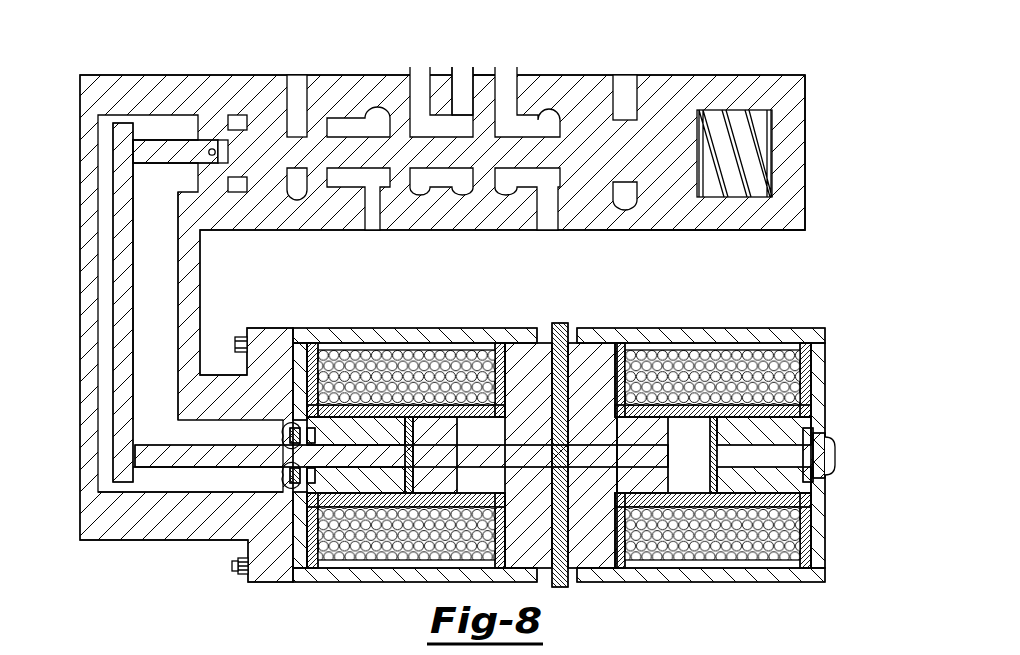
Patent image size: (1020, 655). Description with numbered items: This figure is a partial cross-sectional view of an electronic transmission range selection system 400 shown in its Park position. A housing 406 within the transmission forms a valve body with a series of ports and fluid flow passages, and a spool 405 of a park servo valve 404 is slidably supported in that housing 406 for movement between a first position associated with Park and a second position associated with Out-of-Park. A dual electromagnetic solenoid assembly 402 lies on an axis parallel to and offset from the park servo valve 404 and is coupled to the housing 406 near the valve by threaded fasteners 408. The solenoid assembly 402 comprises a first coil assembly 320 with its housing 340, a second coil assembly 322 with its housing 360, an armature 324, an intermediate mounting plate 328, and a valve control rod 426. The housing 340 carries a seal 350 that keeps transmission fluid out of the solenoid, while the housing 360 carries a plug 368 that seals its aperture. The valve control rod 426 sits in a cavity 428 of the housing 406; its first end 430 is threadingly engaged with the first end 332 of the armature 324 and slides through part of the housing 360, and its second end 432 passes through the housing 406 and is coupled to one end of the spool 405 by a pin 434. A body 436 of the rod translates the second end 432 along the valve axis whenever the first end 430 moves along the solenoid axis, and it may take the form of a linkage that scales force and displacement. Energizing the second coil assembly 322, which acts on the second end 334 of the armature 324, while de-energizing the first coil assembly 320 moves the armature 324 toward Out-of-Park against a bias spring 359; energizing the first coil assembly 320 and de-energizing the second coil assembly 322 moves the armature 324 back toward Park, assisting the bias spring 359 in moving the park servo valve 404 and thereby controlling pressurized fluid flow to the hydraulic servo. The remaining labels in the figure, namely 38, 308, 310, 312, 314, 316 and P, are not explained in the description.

The valve housing 38 is at (808, 173).
The pressure port 308 is at (457, 62).
The exhaust port 310 is at (420, 67).
The supply port 312 is at (506, 93).
The first control port 314 is at (377, 222).
The second control port 316 is at (550, 208).
The first coil assembly 320 is at (323, 594).
The second coil assembly 322 is at (780, 594).
The armature 324 is at (588, 433).
The intermediate mounting plate 328 is at (562, 323).
The first end of armature 332 is at (420, 470).
The second end of armature 334 is at (630, 471).
The housing of first coil assembly 340 is at (695, 583).
The seal 350 is at (284, 474).
The bias spring 359 is at (758, 137).
The housing of second coil assembly 360 is at (350, 583).
The plug 368 is at (836, 452).
The ETRS system 400 is at (842, 92).
The DEM solenoid assembly 402 is at (842, 360).
The park servo valve 404 is at (490, 57).
The spool 405 is at (582, 165).
The housing 406 is at (782, 75).
The threaded fasteners 408 is at (232, 567).
The valve control rod 426 is at (106, 320).
The cavity 428 is at (143, 380).
The first end of valve control rod 430 is at (152, 467).
The second end of valve control rod 432 is at (148, 140).
The pin 434 is at (215, 150).
The body of valve control rod 436 is at (113, 243).
The pressure source P is at (467, 52).